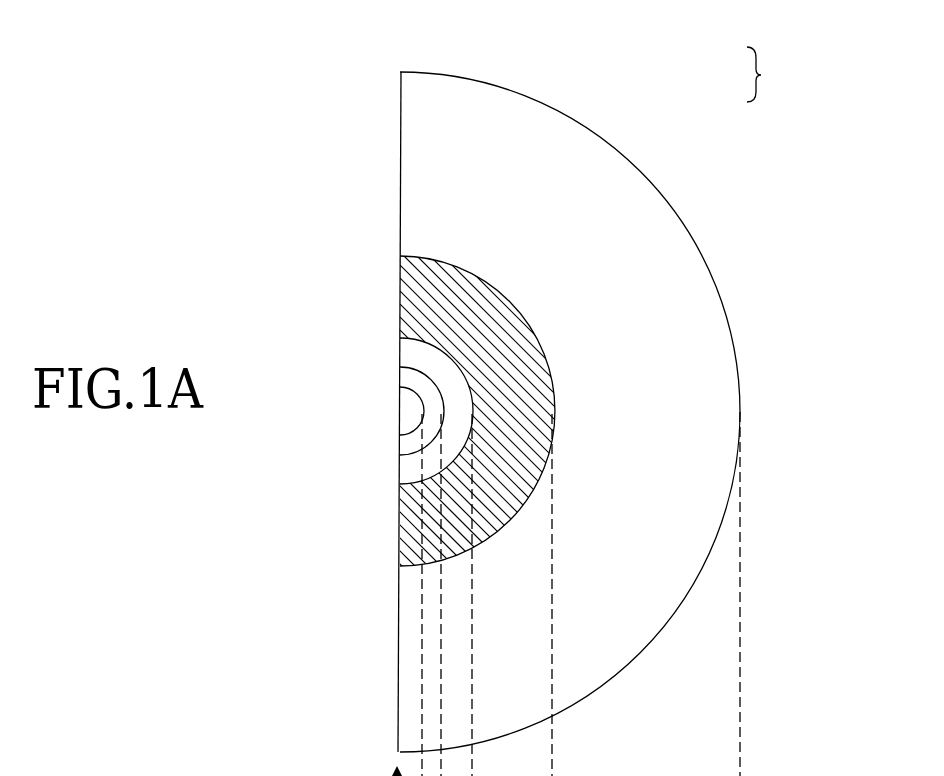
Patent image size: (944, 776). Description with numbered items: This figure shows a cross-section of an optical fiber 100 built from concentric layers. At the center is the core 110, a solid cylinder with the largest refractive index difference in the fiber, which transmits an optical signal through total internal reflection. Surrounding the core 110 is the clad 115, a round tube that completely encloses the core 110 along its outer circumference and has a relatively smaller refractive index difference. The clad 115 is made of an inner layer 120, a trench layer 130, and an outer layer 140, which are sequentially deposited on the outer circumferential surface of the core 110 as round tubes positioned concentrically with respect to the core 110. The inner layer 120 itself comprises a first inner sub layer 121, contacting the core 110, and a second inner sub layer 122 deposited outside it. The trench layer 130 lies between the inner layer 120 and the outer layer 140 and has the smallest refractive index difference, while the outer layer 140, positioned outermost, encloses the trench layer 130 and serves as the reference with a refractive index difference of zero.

The optical fiber 100 is at (290, 83).
The core 110 is at (410, 408).
The clad 115 is at (549, 80).
The inner layer 120 is at (786, 74).
The first inner sub layer 121 is at (415, 383).
The second inner sub layer 122 is at (441, 365).
The trench layer 130 is at (477, 377).
The outer layer 140 is at (717, 368).